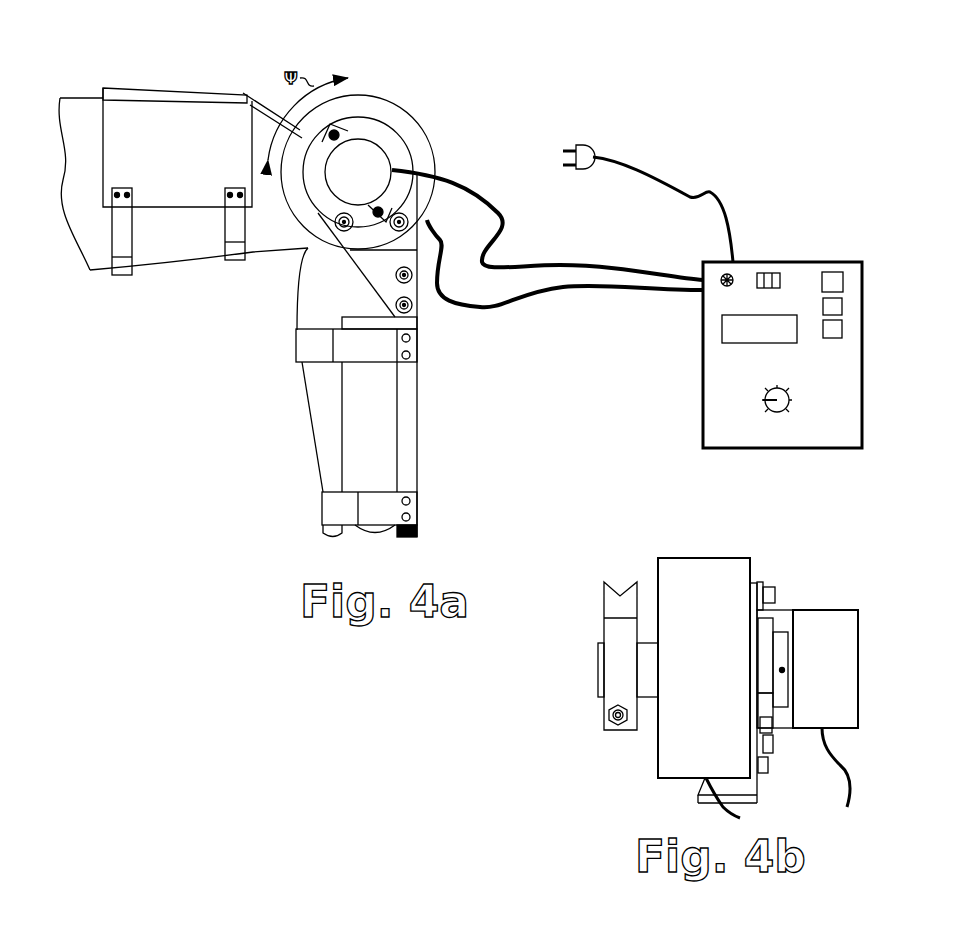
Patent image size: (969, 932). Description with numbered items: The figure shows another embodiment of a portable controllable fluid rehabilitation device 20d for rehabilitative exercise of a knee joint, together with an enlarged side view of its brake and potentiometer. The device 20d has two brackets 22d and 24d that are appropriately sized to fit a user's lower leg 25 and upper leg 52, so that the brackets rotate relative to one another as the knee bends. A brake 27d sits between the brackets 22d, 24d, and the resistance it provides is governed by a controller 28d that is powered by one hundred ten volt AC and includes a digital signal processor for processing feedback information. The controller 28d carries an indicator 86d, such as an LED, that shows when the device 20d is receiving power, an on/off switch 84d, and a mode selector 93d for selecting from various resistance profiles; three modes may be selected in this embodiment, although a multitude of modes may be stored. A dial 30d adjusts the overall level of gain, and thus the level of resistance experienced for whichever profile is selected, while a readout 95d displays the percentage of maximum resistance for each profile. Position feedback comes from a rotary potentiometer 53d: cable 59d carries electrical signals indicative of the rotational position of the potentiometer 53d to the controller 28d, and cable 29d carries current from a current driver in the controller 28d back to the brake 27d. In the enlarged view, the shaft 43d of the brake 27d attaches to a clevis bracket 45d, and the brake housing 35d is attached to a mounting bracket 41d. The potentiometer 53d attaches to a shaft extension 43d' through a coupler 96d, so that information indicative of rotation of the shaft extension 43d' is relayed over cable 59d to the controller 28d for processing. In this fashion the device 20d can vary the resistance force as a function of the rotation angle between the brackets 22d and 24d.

In FIG. 4A, the portable controllable fluid rehabilitation device 20d is at (457, 147).
In FIG. 4A, the bracket 22d is at (178, 87).
In FIG. 4A, the bracket 24d is at (420, 425).
In FIG. 4A, the lower leg 25 is at (357, 354).
In FIG. 4A, the brake 27d is at (413, 112).
In FIG. 4B, the brake 27d is at (657, 731).
In FIG. 4A, the controller 28d is at (703, 356).
In FIG. 4A, the cable 29d is at (495, 317).
In FIG. 4B, the cable 29d is at (706, 778).
In FIG. 4A, the dial 30d is at (773, 416).
In FIG. 4B, the housing 35d is at (707, 680).
In FIG. 4B, the mounting bracket 41d is at (760, 791).
In FIG. 4B, the shaft 43d is at (584, 676).
In FIG. 4B, the shaft extension 43d' is at (813, 650).
In FIG. 4A, the clevis bracket 45d is at (200, 92).
In FIG. 4B, the clevis bracket 45d is at (603, 612).
In FIG. 4A, the upper leg 52 is at (183, 181).
In FIG. 4A, the potentiometer 53d is at (366, 132).
In FIG. 4B, the potentiometer 53d is at (825, 669).
In FIG. 4A, the cable 59d is at (500, 213).
In FIG. 4B, the cable 59d is at (840, 761).
In FIG. 4A, the on/off switch 84d is at (767, 272).
In FIG. 4A, the indicator 86d is at (733, 276).
In FIG. 4A, the mode selector 93d is at (830, 271).
In FIG. 4A, the readout 95d is at (722, 323).
In FIG. 4B, the coupler 96d is at (776, 733).